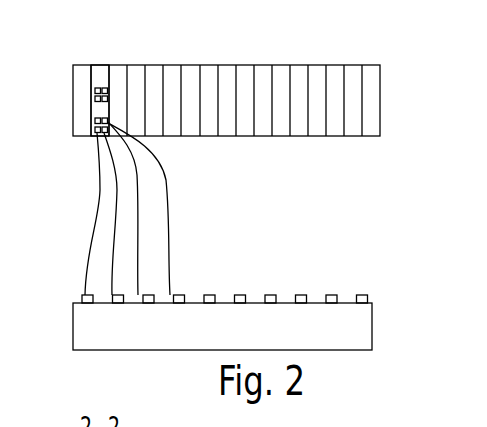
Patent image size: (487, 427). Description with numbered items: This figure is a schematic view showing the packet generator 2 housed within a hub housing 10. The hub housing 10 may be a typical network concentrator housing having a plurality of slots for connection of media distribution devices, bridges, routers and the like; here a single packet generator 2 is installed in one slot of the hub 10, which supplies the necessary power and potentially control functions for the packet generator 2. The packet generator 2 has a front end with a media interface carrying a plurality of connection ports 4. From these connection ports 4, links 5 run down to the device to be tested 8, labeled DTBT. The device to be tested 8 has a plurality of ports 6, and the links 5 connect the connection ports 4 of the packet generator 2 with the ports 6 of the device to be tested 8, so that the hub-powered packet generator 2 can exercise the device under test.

The packet generator 2 is at (98, 72).
The connection ports 4 is at (102, 87).
The links 5 is at (165, 215).
The ports 6 is at (330, 295).
The device to be tested 8 is at (363, 332).
The hub housing 10 is at (363, 62).